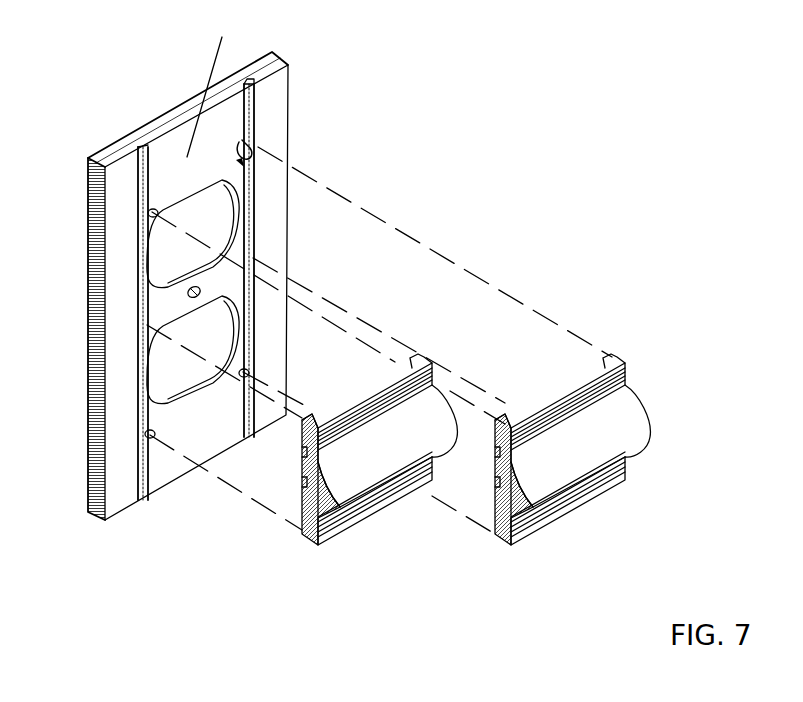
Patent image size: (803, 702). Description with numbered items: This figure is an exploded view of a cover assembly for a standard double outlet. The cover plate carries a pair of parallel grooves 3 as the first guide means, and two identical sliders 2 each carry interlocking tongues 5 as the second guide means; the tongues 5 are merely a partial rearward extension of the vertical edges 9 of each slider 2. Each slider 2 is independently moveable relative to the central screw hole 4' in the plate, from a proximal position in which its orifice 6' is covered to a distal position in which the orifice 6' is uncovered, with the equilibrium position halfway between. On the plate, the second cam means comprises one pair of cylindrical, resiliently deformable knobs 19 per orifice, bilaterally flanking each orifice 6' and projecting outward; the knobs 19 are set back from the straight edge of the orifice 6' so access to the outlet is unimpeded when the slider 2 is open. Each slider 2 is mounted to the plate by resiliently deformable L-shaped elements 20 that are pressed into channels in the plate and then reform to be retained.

The parallel grooves 3 is at (255, 129).
The resiliently deformable knobs 19 is at (153, 212).
The orifice 6' is at (257, 266).
The central screw hole 4' is at (340, 238).
The slider 2 is at (360, 472).
The interlocking tongues 5 is at (417, 355).
The vertical edges 9 is at (300, 535).
The L-shaped elements 20 is at (495, 490).